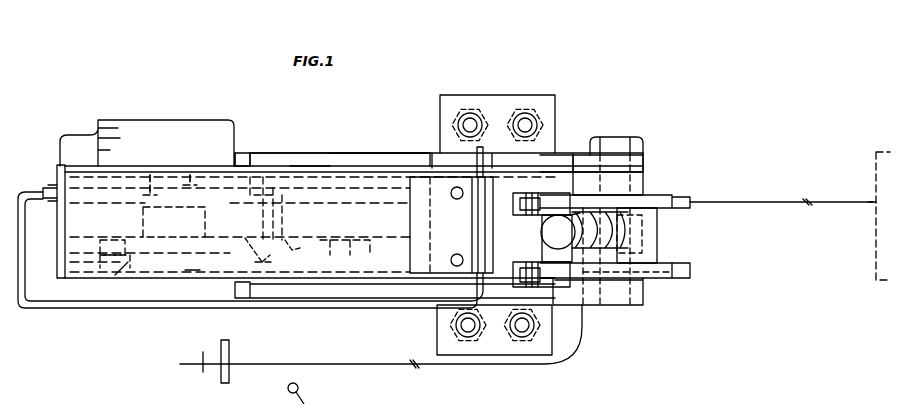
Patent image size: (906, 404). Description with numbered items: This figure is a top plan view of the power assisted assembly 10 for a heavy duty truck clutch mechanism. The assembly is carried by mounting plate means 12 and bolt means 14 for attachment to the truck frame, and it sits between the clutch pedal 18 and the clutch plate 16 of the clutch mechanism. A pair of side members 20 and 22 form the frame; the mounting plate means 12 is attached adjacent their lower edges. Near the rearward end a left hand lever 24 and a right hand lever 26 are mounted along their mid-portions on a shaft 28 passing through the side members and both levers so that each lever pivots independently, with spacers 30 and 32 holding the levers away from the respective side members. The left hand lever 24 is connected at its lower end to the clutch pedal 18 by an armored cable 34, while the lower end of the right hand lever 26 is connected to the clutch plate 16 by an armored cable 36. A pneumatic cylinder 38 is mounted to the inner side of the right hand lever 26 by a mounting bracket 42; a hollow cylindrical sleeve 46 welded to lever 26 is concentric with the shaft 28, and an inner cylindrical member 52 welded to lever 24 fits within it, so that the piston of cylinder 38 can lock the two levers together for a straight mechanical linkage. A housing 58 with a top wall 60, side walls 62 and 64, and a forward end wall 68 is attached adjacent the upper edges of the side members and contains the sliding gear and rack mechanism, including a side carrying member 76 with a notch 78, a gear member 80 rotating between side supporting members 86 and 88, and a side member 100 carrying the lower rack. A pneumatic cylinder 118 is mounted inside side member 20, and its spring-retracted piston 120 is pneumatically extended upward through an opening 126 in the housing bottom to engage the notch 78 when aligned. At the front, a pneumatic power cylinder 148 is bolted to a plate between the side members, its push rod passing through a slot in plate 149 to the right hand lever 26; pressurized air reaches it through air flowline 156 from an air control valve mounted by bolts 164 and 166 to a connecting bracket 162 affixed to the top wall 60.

The power assisted assembly 10 is at (214, 100).
The mounting plate means 12 is at (440, 113).
The bolt means 14 is at (515, 112).
The clutch plate 16 is at (878, 150).
The clutch pedal 18 is at (200, 356).
The side member 20 is at (281, 296).
The side member 22 is at (276, 153).
The left hand lever 24 is at (672, 279).
The right hand lever 26 is at (672, 197).
The shaft 28 is at (620, 141).
The spacer 30 is at (645, 287).
The spacer 32 is at (645, 182).
The armored cable 34 is at (538, 367).
The armored cable 36 is at (781, 211).
The pneumatic cylinder 38 is at (580, 213).
The mounting bracket 42 is at (548, 229).
The hollow cylindrical sleeve 46 is at (658, 230).
The inner cylindrical member 52 is at (652, 247).
The housing 58 is at (298, 166).
The top wall 60 is at (354, 215).
The side wall 62 is at (155, 275).
The side wall 64 is at (335, 166).
The forward end wall 68 is at (57, 176).
The side carrying member 76 is at (188, 274).
The notch 78 is at (110, 270).
The gear member 80 is at (143, 226).
The side supporting member 86 is at (110, 243).
The side supporting member 88 is at (153, 175).
The side member 100 is at (197, 162).
The pneumatic cylinder 118 is at (292, 250).
The piston 120 is at (255, 263).
The opening 126 is at (262, 258).
The pneumatic power cylinder 148 is at (123, 124).
The plate 149 is at (244, 152).
The air flowline 156 is at (80, 304).
The connecting bracket 162 is at (412, 222).
The bolt 164 is at (457, 254).
The bolt 166 is at (457, 199).